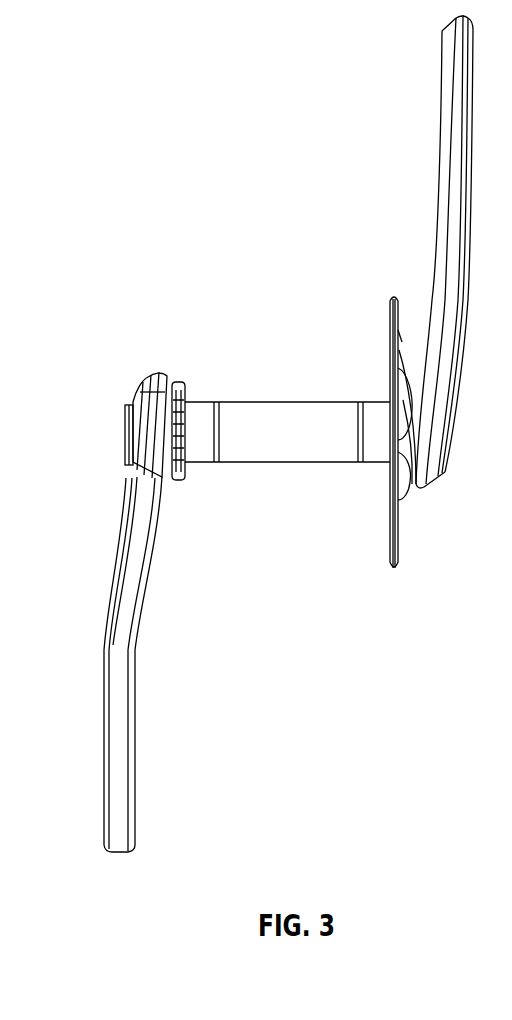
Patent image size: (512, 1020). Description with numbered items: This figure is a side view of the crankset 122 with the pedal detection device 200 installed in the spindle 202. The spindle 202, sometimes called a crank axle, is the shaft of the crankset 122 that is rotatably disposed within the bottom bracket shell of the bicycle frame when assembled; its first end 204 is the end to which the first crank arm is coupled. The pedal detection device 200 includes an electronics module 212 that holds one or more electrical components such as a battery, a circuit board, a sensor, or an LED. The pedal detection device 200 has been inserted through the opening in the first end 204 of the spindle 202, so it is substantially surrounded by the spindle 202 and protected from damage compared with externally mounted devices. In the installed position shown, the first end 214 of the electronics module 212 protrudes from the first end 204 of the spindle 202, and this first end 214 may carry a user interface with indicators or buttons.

The crankset 122 is at (150, 117).
The pedal detection device 200 is at (105, 412).
The spindle 202 is at (283, 406).
The first end of the spindle 204 is at (134, 402).
The electronics module 212 is at (127, 447).
The first end of the electronics module 214 is at (125, 435).